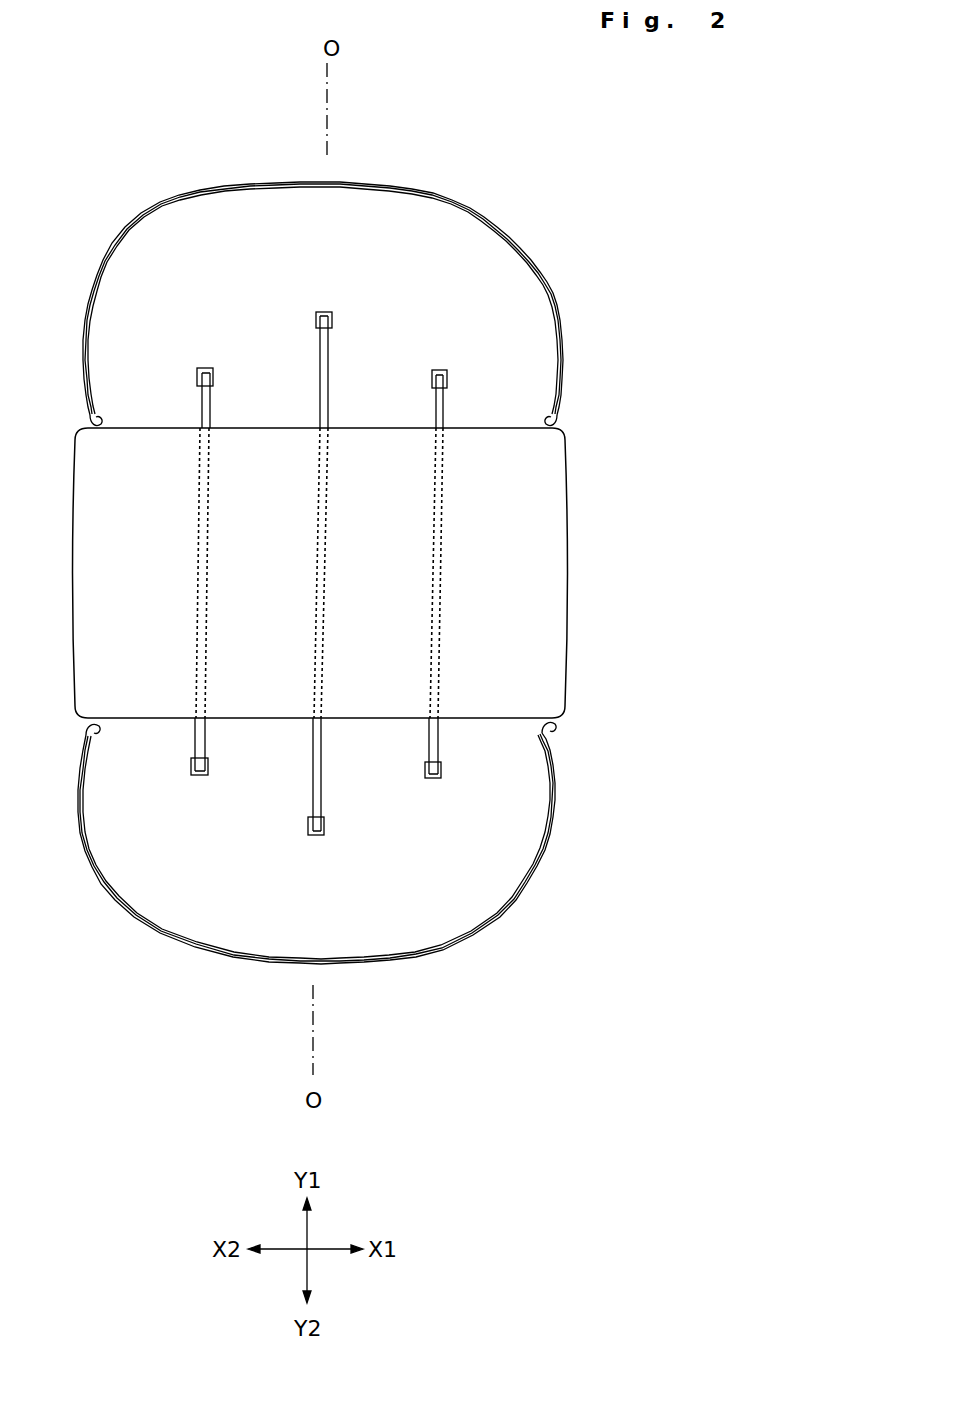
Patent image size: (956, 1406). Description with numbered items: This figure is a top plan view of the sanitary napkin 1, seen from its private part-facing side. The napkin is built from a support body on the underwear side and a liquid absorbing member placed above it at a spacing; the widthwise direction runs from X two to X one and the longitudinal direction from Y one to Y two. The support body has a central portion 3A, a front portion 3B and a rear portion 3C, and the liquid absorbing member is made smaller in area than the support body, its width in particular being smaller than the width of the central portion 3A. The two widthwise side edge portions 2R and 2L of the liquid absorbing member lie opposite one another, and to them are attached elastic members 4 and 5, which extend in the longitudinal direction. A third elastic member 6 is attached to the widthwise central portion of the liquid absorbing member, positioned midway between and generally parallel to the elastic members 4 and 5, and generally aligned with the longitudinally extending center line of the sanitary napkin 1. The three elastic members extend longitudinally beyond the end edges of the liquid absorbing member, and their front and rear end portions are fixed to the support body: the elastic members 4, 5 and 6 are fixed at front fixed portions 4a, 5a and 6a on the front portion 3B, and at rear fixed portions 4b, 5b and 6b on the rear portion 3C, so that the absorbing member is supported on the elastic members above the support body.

The sanitary napkin 1 is at (601, 446).
The side edge portion 2L is at (197, 604).
The side edge portion 2R is at (446, 618).
The central portion 3A is at (545, 497).
The front portion 3B is at (463, 237).
The rear portion 3C is at (465, 906).
The elastic member 4 is at (444, 417).
The front fixed portion 4a is at (448, 378).
The rear fixed portion 4b is at (441, 768).
The elastic member 5 is at (211, 416).
The front fixed portion 5a is at (215, 378).
The rear fixed portion 5b is at (208, 768).
The elastic member 6 is at (329, 358).
The front fixed portion 6a is at (333, 320).
The rear fixed portion 6b is at (325, 823).